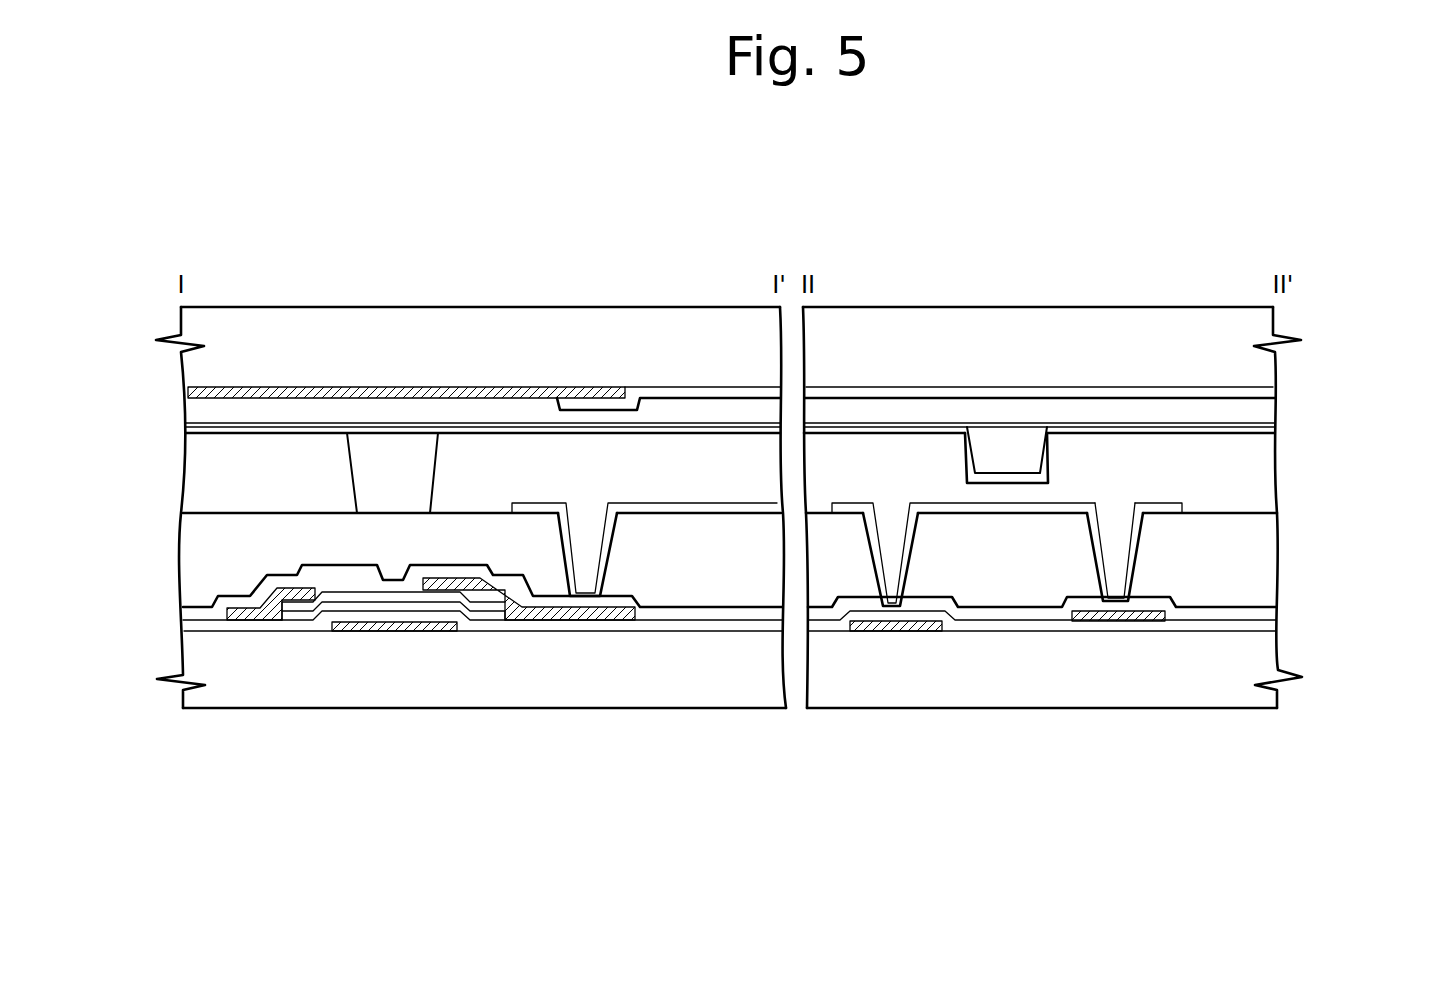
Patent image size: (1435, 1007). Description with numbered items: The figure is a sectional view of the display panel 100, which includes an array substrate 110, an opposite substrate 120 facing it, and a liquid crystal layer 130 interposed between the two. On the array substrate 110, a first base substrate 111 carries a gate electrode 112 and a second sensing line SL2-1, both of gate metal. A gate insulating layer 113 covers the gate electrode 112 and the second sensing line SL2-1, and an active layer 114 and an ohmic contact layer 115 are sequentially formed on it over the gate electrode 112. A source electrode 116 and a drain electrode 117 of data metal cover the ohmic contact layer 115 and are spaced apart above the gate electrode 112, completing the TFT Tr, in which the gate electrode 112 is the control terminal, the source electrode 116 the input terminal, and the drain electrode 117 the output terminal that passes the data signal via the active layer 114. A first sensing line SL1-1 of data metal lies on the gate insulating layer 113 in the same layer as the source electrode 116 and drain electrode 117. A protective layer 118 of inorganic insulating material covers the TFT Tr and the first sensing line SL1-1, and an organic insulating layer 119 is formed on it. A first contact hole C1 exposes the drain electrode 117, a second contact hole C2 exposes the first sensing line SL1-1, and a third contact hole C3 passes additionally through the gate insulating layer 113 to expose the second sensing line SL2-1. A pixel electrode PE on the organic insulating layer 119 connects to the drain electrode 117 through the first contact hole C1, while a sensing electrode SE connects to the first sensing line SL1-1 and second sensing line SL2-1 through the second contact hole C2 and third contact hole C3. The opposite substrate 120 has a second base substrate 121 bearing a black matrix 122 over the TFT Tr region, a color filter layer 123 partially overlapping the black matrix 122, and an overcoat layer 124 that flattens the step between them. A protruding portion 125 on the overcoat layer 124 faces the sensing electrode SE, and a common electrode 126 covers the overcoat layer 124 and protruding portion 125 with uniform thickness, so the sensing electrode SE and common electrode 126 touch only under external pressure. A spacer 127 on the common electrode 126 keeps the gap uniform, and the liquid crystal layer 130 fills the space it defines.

The display panel 100 is at (1227, 190).
The array substrate 110 is at (1380, 548).
The first base substrate 111 is at (1270, 660).
The gate electrode 112 is at (413, 633).
The gate insulating layer 113 is at (298, 628).
The active layer 114 is at (353, 606).
The ohmic contact layer 115 is at (487, 605).
The source electrode 116 is at (240, 621).
The drain electrode 117 is at (551, 616).
The protective layer 118 is at (668, 612).
The organic insulating layer 119 is at (738, 578).
The opposite substrate 120 is at (1380, 312).
The second base substrate 121 is at (1268, 323).
The black matrix 122 is at (186, 393).
The color filter layer 123 is at (1266, 391).
The overcoat layer 124 is at (1262, 412).
The protruding portion 125 is at (1005, 444).
The common electrode 126 is at (1262, 433).
The spacer 127 is at (415, 470).
The liquid crystal layer 130 is at (1251, 472).
The pixel electrode PE is at (686, 506).
The sensing electrode SE is at (1165, 506).
The first contact hole C1 is at (593, 558).
The second contact hole C2 is at (1125, 555).
The third contact hole C3 is at (902, 558).
The first sensing line SL1-1 is at (1115, 620).
The second sensing line SL2-1 is at (894, 624).
The TFT Tr is at (215, 775).